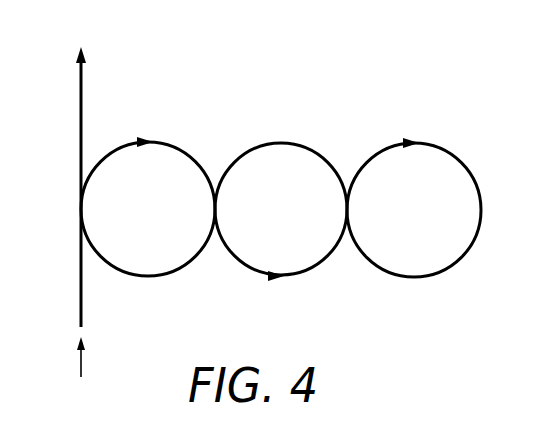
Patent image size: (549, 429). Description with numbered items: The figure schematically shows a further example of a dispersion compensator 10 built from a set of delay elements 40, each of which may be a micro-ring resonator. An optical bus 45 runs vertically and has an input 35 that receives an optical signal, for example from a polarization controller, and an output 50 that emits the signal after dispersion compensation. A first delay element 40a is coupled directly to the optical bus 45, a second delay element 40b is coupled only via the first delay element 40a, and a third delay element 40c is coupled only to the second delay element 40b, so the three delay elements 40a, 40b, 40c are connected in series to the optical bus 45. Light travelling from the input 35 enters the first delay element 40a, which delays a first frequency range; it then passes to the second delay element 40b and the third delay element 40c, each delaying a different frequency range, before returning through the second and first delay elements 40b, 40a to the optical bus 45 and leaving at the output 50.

The dispersion compensator 10 is at (379, 73).
The input 35 is at (83, 357).
The delay element 40 is at (158, 142).
The first delay element 40a is at (178, 269).
The second delay element 40b is at (312, 268).
The third delay element 40c is at (445, 269).
The optical bus 45 is at (79, 282).
The output 50 is at (83, 73).